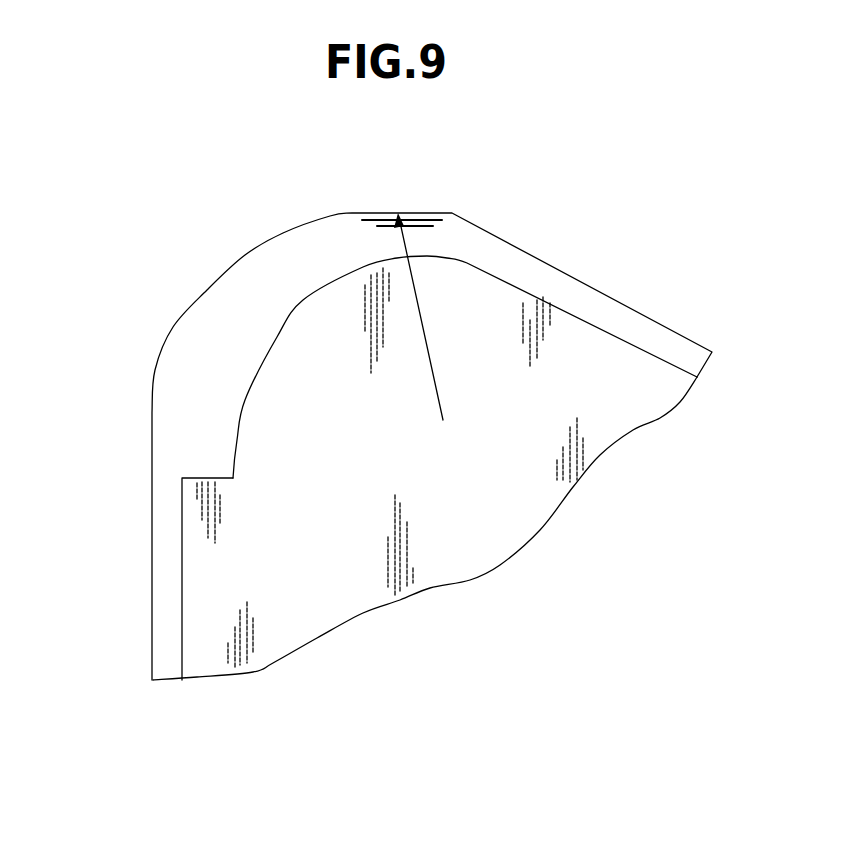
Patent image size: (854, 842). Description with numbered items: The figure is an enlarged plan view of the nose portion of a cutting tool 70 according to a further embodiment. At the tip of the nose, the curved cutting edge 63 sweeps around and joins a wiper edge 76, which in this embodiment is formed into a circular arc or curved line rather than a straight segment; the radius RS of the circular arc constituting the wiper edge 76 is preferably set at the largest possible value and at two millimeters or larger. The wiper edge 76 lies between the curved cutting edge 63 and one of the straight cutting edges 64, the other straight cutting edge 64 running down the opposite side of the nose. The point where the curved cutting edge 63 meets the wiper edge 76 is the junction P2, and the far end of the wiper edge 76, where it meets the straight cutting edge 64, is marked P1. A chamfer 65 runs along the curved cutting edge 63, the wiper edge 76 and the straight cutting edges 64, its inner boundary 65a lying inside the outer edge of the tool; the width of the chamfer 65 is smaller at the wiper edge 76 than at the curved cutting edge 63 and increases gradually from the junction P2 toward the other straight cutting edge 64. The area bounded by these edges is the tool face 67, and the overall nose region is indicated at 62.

The shoulder member 62 is at (279, 226).
The curved cutting edge 63 is at (207, 292).
The straight cutting edge 64 is at (605, 293).
The chamfer 65 is at (203, 350).
The inner curved surface 65a is at (277, 338).
The tool face 67 is at (203, 560).
The cutting tool 70 is at (475, 542).
The wiper edge 76 is at (415, 212).
The first point P1 is at (452, 212).
The junction P2 is at (350, 212).
The radius RS is at (433, 316).